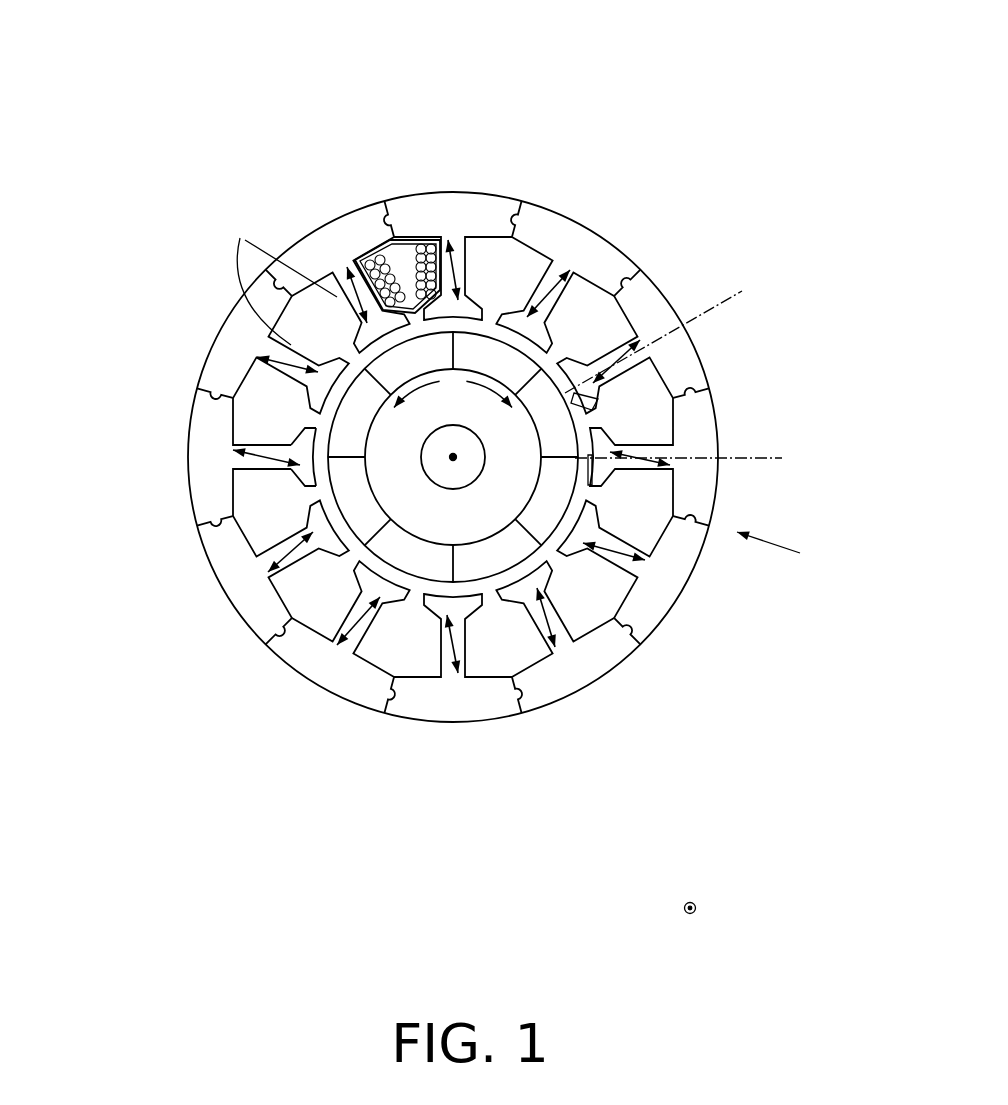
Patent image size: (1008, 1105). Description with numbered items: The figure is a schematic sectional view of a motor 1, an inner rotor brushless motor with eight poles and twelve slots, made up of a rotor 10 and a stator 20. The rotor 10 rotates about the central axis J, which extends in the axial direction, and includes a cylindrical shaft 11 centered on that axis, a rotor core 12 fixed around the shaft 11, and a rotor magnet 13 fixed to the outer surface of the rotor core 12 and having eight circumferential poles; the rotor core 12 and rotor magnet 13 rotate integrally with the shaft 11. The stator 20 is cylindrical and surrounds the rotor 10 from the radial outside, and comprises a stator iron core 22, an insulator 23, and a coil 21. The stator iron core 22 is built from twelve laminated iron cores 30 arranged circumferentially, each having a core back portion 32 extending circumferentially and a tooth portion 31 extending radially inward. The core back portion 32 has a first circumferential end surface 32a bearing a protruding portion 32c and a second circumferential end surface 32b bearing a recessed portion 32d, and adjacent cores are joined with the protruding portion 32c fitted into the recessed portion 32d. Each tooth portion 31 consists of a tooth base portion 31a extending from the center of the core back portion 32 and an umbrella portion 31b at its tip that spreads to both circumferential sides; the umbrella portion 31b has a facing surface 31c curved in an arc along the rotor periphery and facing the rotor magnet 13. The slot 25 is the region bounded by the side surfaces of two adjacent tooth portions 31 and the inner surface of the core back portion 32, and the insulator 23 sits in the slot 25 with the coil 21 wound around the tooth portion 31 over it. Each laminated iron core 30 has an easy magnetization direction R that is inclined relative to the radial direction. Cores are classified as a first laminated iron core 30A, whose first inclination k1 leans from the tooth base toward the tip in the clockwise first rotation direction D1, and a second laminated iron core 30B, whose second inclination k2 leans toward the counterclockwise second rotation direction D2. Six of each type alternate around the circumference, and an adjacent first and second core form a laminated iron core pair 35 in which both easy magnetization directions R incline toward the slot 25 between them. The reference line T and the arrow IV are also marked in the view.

The motor 1 is at (686, 93).
The rotor 10 is at (545, 365).
The shaft 11 is at (438, 477).
The rotor core 12 is at (392, 500).
The rotor magnet 13 is at (350, 490).
The stator 20 is at (667, 297).
The coil 21 is at (430, 248).
The stator iron core 22 is at (718, 417).
The insulator 23 is at (393, 240).
The slot 25 is at (405, 250).
The laminated iron core 30 is at (190, 488).
The first laminated iron core 30A is at (475, 207).
The second laminated iron core 30B is at (323, 240).
The tooth portion 31 is at (112, 365).
The tooth base portion 31a is at (257, 443).
The umbrella portion 31b is at (293, 433).
The facing surface 31c is at (322, 440).
The core back portion 32 is at (197, 462).
The first circumferential end surface 32a is at (202, 532).
The second circumferential end surface 32b is at (207, 393).
The protruding portion 32c is at (214, 525).
The recessed portion 32d is at (214, 388).
The laminated iron core pair 35 is at (755, 262).
The first inclination k1 is at (590, 400).
The second inclination k2 is at (591, 478).
The tooth center line T is at (735, 292).
The easy magnetization direction R is at (282, 276).
The central axis J is at (456, 460).
The first rotation direction D1 is at (498, 415).
The second rotation direction D2 is at (403, 415).
The viewing direction IV is at (769, 556).